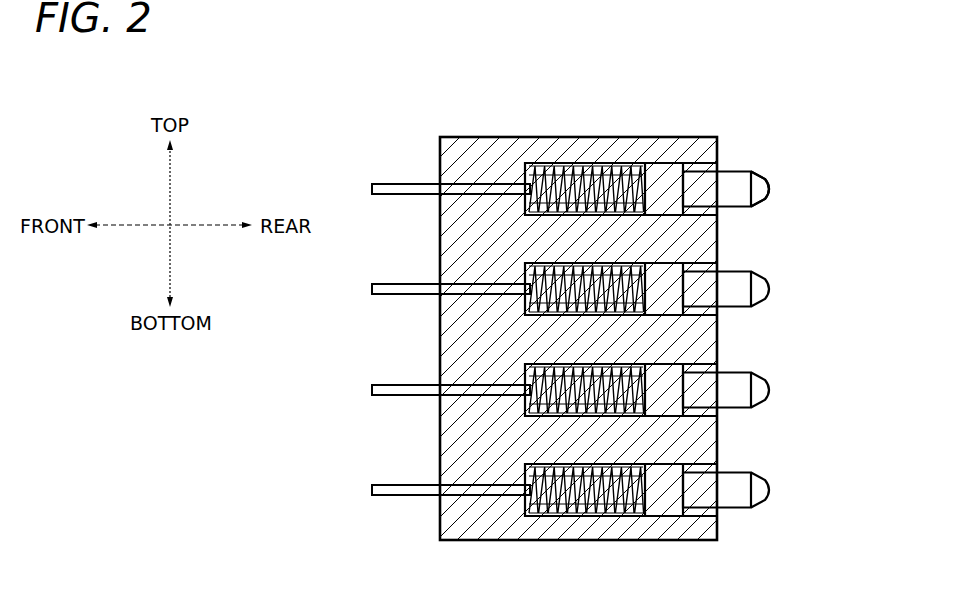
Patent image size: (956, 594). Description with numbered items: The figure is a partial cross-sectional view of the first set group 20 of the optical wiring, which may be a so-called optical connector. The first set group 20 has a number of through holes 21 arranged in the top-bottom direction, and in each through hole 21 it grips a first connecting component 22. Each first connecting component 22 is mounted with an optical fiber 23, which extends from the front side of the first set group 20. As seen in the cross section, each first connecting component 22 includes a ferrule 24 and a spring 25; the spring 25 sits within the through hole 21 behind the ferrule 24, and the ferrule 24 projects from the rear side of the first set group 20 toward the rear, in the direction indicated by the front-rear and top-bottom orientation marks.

The first set group 20 is at (440, 440).
The through hole 21 is at (766, 174).
The first connecting component 22 is at (736, 171).
The optical fiber 23 is at (412, 186).
The ferrule 24 is at (754, 176).
The spring 25 is at (540, 163).